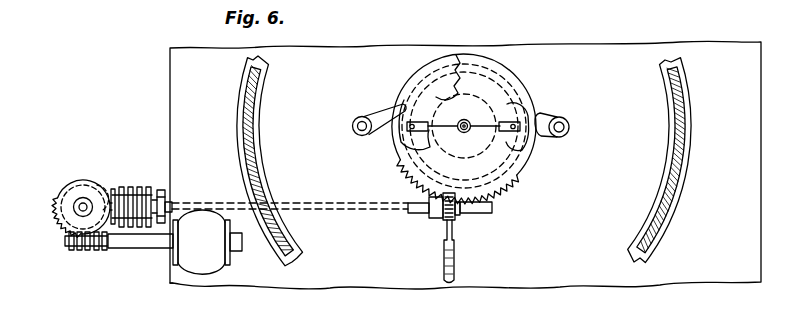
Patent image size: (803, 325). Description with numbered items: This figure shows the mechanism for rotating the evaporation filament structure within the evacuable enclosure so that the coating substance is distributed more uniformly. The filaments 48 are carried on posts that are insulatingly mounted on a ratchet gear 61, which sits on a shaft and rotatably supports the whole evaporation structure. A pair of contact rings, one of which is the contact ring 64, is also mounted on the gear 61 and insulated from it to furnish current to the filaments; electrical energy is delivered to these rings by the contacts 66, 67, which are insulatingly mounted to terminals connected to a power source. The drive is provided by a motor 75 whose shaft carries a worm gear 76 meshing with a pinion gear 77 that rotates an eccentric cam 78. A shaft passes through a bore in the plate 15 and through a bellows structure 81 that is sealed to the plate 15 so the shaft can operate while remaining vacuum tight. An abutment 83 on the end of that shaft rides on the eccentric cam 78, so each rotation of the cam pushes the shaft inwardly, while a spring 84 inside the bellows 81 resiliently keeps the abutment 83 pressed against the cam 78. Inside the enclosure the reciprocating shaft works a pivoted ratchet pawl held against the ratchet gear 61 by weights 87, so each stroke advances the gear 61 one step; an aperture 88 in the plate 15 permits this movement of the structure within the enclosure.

The plate 15 is at (177, 71).
The filament 48 is at (464, 119).
The ratchet gear 61 is at (505, 177).
The contact ring 64 is at (430, 76).
The contact 66 is at (390, 111).
The contact 67 is at (553, 114).
The motor 75 is at (205, 262).
The worm gear 76 is at (90, 250).
The pinion gear 77 is at (58, 221).
The eccentric cam 78 is at (62, 190).
The bellows structure 81 is at (134, 187).
The abutment 83 is at (97, 180).
The spring 84 is at (160, 189).
The weights 87 is at (444, 257).
The aperture 88 is at (478, 212).